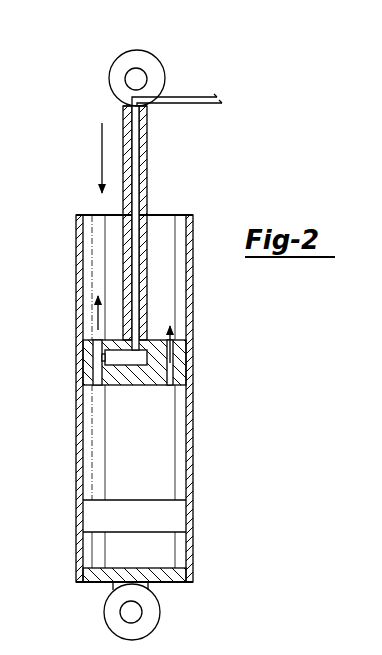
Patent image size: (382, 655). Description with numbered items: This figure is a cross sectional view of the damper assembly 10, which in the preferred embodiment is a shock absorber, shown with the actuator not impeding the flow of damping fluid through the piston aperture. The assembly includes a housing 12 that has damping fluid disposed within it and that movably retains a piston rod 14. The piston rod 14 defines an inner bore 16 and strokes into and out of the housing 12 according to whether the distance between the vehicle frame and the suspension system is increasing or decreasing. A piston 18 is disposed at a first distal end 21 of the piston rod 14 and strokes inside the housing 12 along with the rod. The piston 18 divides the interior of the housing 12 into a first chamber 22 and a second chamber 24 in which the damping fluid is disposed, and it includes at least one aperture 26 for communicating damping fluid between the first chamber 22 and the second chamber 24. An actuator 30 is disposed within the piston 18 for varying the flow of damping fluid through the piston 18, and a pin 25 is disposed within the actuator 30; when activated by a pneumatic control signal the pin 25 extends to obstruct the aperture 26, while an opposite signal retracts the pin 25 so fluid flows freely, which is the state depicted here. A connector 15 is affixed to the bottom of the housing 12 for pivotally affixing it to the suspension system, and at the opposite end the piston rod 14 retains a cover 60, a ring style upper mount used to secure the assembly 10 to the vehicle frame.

The damper assembly 10 is at (176, 339).
The housing 12 is at (193, 303).
The piston rod 14 is at (138, 222).
The connector 15 is at (142, 634).
The inner bore 16 is at (137, 205).
The piston 18 is at (123, 377).
The first distal end 21 is at (120, 338).
The first chamber 22 is at (112, 260).
The second chamber 24 is at (162, 482).
The pin 25 is at (103, 357).
The aperture 26 is at (100, 377).
The actuator 30 is at (140, 366).
The cover 60 is at (157, 80).